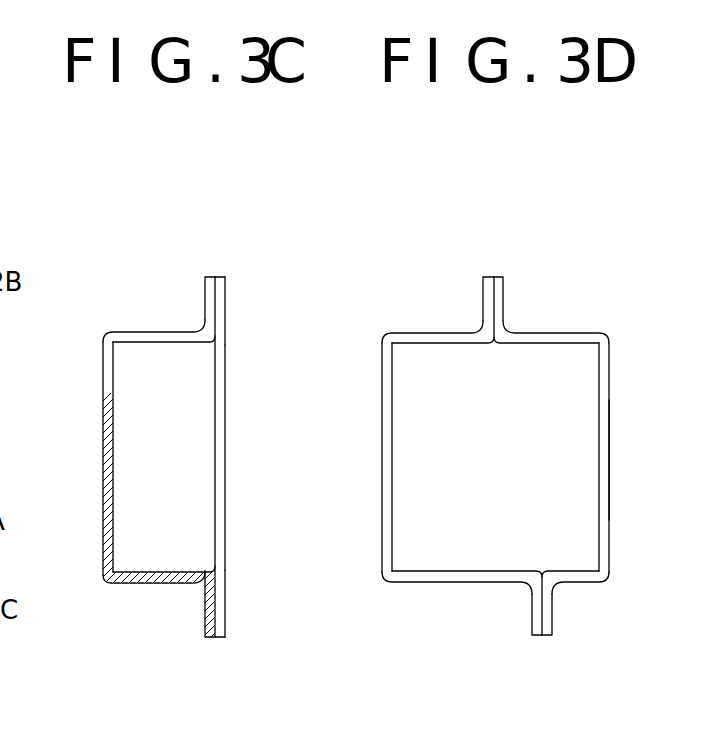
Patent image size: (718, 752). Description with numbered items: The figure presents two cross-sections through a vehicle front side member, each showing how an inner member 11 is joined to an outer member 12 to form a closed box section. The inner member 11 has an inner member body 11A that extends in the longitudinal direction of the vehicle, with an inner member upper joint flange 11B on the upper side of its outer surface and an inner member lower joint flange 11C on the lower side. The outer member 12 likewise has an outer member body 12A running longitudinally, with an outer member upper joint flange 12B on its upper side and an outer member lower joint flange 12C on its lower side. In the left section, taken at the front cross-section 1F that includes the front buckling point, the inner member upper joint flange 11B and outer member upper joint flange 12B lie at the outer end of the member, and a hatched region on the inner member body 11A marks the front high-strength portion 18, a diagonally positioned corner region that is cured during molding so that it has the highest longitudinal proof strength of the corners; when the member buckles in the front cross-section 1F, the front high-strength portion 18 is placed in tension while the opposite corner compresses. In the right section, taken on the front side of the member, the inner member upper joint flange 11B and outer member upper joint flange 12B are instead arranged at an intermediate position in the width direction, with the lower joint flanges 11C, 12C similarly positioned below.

In FIG. 3C, the front cross-section 1F is at (172, 250).
In FIG. 3C, the inner member 11 is at (146, 300).
In FIG. 3D, the inner member 11 is at (424, 303).
In FIG. 3C, the inner member body 11A is at (103, 445).
In FIG. 3D, the inner member body 11A is at (382, 447).
In FIG. 3C, the inner member upper joint flange 11B is at (205, 303).
In FIG. 3D, the inner member upper joint flange 11B is at (483, 305).
In FIG. 3C, the inner member lower joint flange 11C is at (205, 612).
In FIG. 3D, the inner member lower joint flange 11C is at (532, 619).
In FIG. 3C, the outer member 12 is at (250, 270).
In FIG. 3D, the outer member 12 is at (622, 304).
In FIG. 3C, the outer member body 12A is at (225, 520).
In FIG. 3D, the outer member body 12A is at (609, 447).
In FIG. 3C, the outer member upper joint flange 12B is at (216, 311).
In FIG. 3D, the outer member upper joint flange 12B is at (503, 307).
In FIG. 3C, the outer member lower joint flange 12C is at (226, 605).
In FIG. 3D, the outer member lower joint flange 12C is at (552, 614).
In FIG. 3C, the front high-strength portion 18 is at (108, 583).